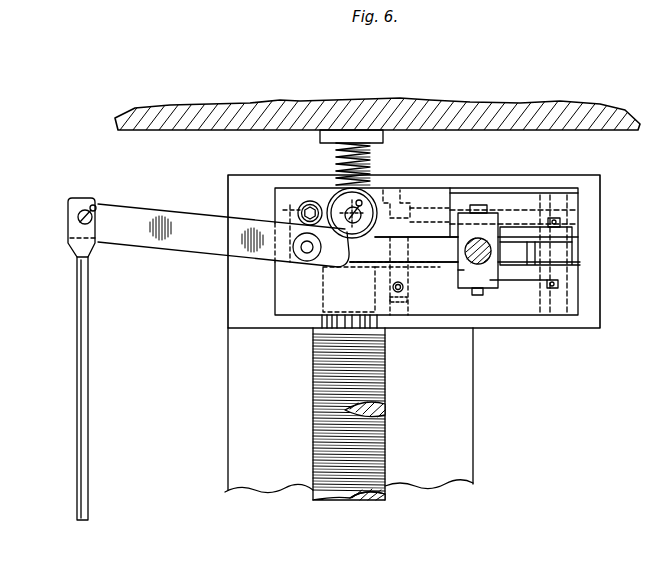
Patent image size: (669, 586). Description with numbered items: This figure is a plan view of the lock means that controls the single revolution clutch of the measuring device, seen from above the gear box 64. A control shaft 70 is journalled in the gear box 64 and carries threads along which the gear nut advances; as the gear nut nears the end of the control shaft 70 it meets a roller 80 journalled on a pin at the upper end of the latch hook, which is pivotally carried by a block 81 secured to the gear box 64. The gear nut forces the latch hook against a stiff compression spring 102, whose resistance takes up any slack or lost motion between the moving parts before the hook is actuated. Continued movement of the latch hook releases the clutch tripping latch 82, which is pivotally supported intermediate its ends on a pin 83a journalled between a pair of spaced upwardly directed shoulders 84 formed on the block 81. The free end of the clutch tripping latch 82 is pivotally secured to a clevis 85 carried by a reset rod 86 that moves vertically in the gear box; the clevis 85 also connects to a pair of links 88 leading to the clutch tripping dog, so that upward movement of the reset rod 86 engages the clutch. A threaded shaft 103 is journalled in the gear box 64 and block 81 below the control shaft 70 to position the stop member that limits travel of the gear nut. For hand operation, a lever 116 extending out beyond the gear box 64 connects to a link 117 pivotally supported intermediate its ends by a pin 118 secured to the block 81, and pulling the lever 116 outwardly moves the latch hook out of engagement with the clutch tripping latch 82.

The gear box 64 is at (463, 107).
The control shaft 70 is at (383, 415).
The roller 80 is at (340, 206).
The block 81 is at (513, 320).
The clutch tripping latch 82 is at (413, 260).
The pin 83a is at (397, 197).
The shoulders 84 is at (457, 188).
The clevis 85 is at (462, 270).
The reset rod 86 is at (488, 245).
The links 88 is at (522, 223).
The compression spring 102 is at (370, 160).
The threaded shaft 103 is at (380, 500).
The lever 116 is at (77, 336).
The link 117 is at (178, 250).
The pin 118 is at (298, 254).